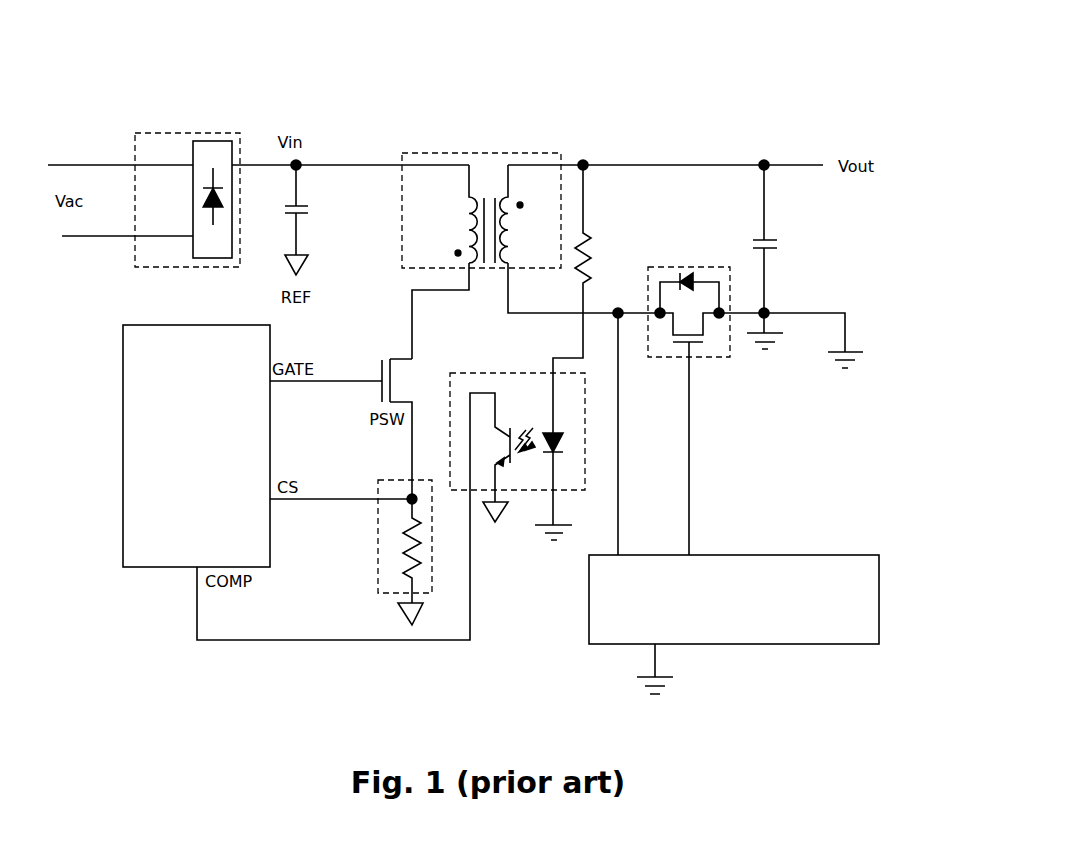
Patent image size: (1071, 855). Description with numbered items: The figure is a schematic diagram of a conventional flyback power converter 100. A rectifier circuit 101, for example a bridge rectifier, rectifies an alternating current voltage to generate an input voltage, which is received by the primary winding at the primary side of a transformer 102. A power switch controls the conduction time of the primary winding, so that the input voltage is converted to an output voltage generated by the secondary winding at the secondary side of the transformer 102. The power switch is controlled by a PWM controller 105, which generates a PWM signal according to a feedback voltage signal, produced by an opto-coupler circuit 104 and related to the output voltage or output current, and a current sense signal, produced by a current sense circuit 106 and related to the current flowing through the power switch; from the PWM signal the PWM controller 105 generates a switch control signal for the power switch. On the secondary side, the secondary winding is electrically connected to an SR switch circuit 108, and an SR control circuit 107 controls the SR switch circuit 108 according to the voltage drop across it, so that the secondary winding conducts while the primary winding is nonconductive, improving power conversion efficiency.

The flyback power converter 100 is at (842, 60).
The rectifier circuit 101 is at (187, 200).
The transformer 102 is at (498, 153).
The opto-coupler circuit 104 is at (540, 490).
The PWM controller 105 is at (196, 446).
The current sense circuit 106 is at (378, 578).
The SR control circuit 107 is at (734, 612).
The SR switch circuit 108 is at (705, 357).